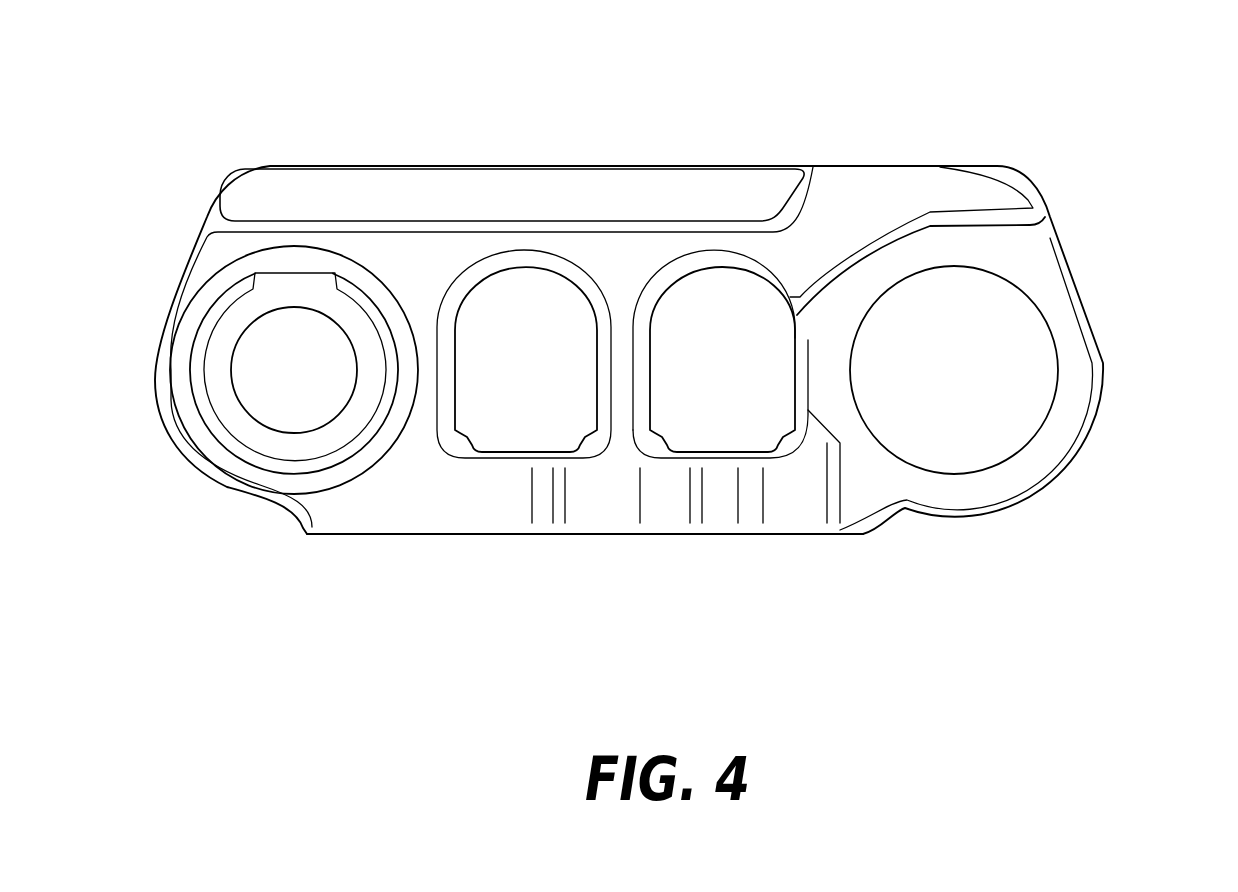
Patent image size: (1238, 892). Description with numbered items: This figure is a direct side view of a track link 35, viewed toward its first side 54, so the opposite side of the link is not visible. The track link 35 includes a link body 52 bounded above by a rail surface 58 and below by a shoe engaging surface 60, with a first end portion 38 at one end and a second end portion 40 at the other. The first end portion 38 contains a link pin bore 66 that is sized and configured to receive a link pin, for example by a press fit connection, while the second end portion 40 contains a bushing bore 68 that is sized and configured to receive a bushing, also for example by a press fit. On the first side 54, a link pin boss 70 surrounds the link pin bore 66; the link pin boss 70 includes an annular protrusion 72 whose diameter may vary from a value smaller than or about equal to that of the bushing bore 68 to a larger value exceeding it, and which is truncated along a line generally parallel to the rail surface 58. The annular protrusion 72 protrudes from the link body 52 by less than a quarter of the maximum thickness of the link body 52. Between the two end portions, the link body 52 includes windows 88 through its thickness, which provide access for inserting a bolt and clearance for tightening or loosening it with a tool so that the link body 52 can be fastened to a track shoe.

The track link 35 is at (635, 123).
The first end portion 38 is at (141, 300).
The second end portion 40 is at (1114, 363).
The link body 52 is at (621, 509).
The first side 54 is at (492, 502).
The rail surface 58 is at (541, 166).
The shoe engaging surface 60 is at (687, 534).
The link pin bore 66 is at (357, 366).
The bushing bore 68 is at (940, 470).
The link pin boss 70 is at (270, 446).
The annular protrusion 72 is at (367, 450).
The windows 88 is at (455, 358).